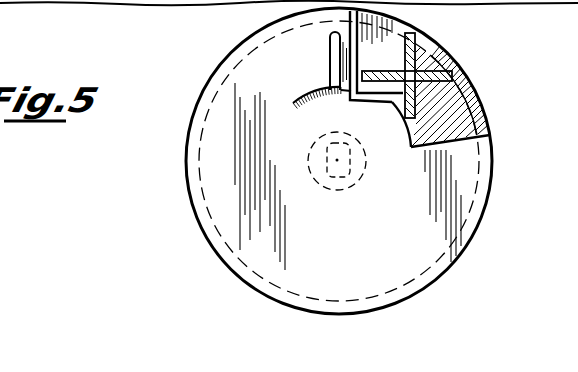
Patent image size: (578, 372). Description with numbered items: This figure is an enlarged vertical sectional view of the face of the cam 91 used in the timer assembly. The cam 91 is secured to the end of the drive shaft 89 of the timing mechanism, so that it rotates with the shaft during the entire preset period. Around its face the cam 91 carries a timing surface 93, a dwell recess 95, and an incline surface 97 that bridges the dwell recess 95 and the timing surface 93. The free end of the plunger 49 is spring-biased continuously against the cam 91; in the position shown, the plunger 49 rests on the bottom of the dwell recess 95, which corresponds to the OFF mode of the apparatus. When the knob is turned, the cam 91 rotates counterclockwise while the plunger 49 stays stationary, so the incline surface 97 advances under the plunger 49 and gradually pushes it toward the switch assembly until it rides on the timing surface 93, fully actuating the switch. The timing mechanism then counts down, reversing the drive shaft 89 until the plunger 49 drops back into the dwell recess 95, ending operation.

The plunger 49 is at (412, 56).
The drive shaft 89 is at (323, 152).
The cam 91 is at (301, 161).
The timing surface 93 is at (452, 184).
The dwell recess 95 is at (393, 33).
The incline surface 97 is at (467, 122).